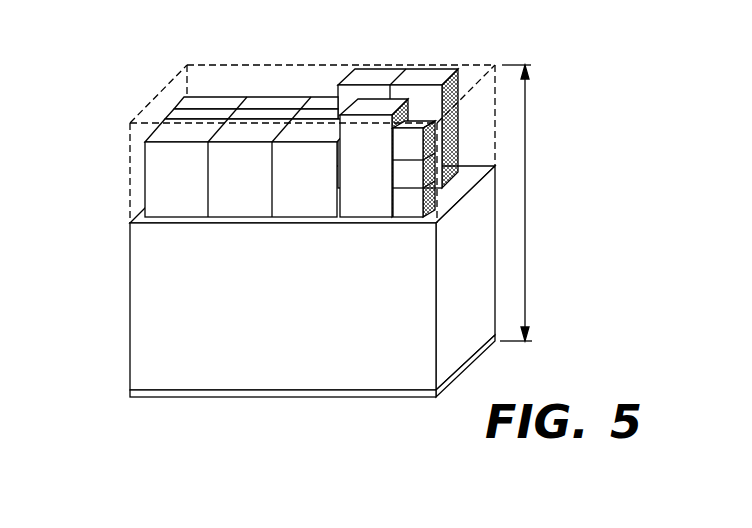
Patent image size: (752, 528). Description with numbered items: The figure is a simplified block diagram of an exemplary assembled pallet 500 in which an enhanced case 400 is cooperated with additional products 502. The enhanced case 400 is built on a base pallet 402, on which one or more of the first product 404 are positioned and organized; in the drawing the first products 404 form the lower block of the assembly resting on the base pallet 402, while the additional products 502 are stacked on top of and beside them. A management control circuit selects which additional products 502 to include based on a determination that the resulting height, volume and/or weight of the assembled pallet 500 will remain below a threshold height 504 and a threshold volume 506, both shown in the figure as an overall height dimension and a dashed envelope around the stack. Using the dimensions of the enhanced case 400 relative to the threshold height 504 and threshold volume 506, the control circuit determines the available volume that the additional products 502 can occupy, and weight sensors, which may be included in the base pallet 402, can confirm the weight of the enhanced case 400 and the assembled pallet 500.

The enhanced case 400 is at (264, 299).
The base pallet 402 is at (155, 393).
The first product 404 is at (147, 306).
The assembled pallet 500 is at (356, 216).
The additional products 502 is at (307, 130).
The threshold height 504 is at (525, 242).
The threshold volume 506 is at (262, 65).